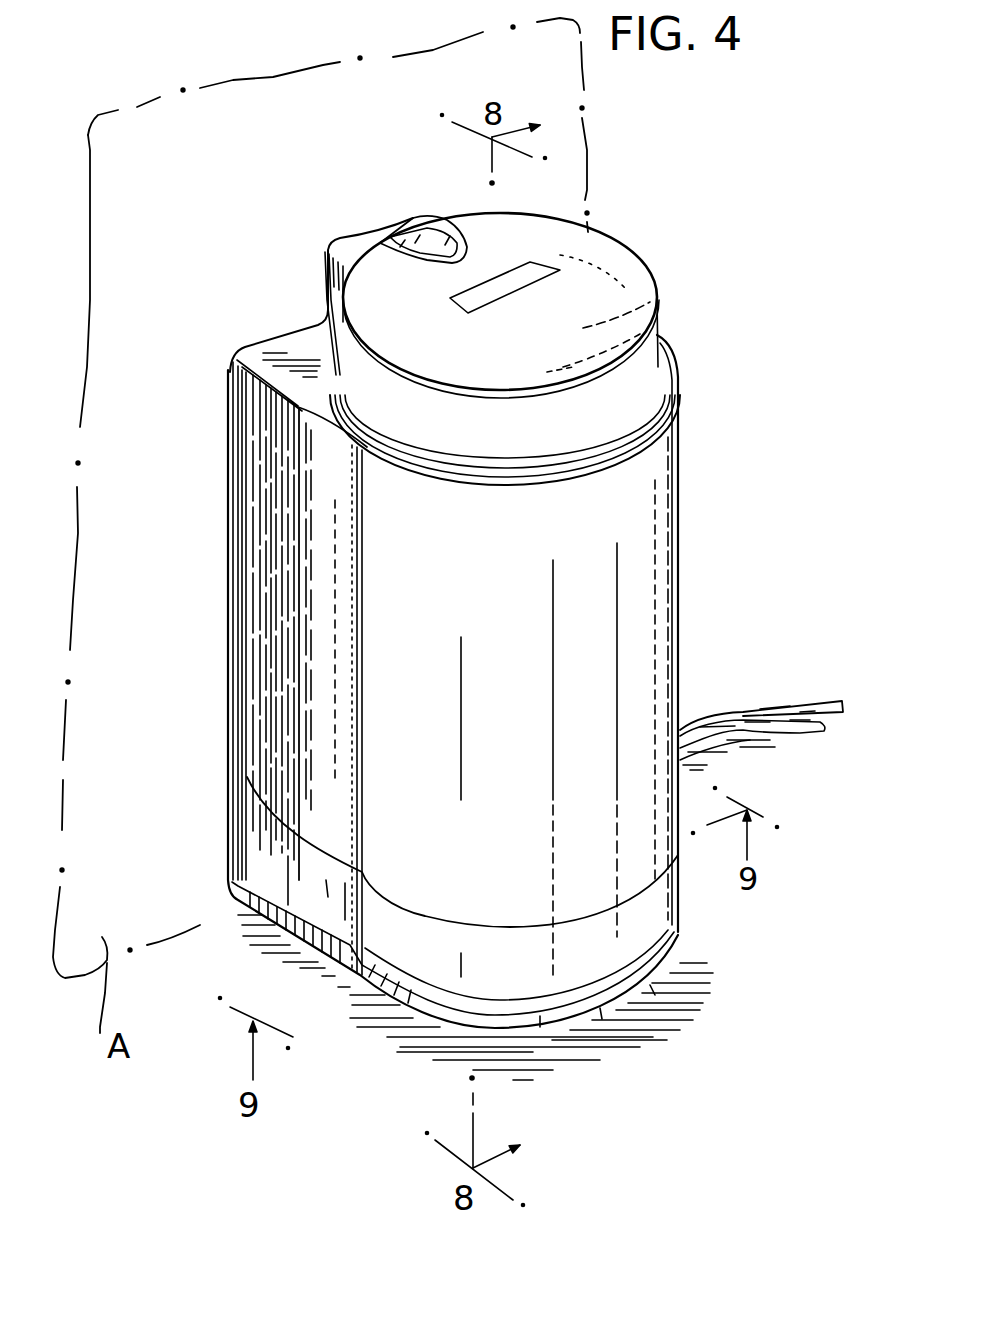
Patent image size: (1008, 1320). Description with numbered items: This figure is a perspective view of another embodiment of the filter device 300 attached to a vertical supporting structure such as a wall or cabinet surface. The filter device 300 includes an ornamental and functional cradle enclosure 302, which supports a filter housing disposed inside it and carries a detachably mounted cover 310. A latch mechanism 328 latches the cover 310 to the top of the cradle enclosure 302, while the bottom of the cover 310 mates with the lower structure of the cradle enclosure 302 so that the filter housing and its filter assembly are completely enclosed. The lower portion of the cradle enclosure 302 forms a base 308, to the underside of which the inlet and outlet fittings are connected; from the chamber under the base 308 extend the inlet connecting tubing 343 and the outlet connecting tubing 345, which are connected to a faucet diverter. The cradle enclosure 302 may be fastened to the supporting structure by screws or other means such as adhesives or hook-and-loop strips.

The filter device 300 is at (792, 308).
The cradle enclosure 302 is at (690, 617).
The base 308 is at (583, 965).
The cover 310 is at (323, 641).
The latch mechanism 328 is at (411, 231).
The inlet connecting tubing 343 is at (838, 698).
The outlet connecting tubing 345 is at (823, 732).